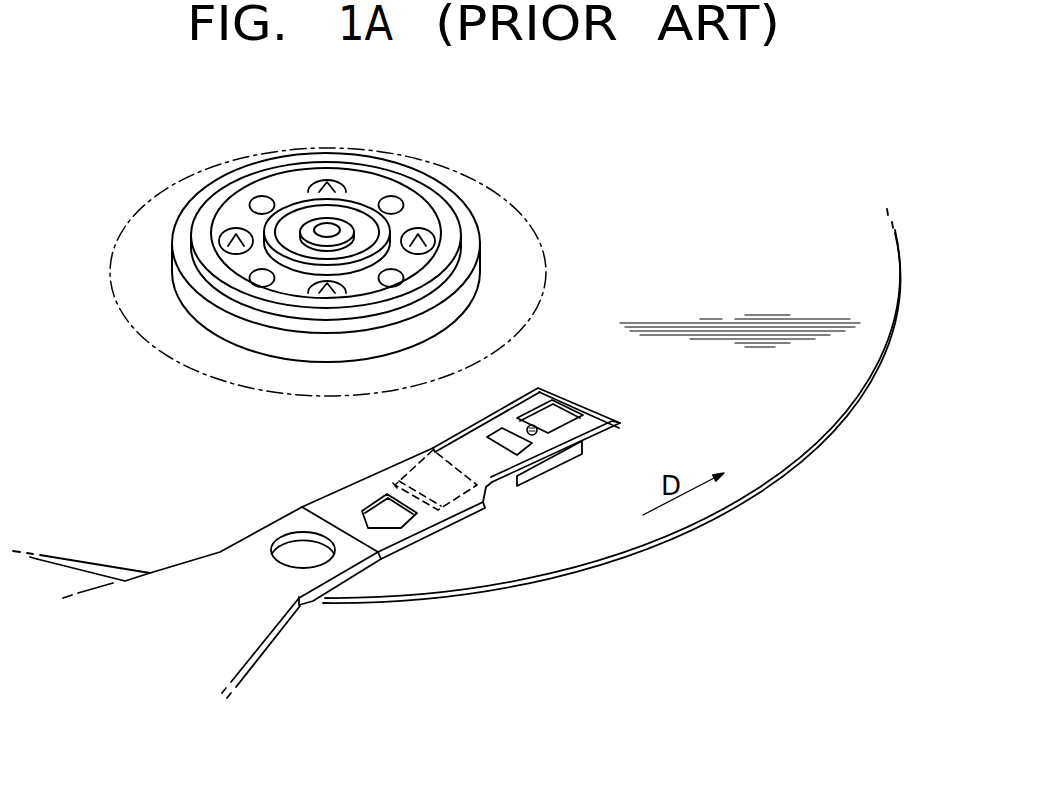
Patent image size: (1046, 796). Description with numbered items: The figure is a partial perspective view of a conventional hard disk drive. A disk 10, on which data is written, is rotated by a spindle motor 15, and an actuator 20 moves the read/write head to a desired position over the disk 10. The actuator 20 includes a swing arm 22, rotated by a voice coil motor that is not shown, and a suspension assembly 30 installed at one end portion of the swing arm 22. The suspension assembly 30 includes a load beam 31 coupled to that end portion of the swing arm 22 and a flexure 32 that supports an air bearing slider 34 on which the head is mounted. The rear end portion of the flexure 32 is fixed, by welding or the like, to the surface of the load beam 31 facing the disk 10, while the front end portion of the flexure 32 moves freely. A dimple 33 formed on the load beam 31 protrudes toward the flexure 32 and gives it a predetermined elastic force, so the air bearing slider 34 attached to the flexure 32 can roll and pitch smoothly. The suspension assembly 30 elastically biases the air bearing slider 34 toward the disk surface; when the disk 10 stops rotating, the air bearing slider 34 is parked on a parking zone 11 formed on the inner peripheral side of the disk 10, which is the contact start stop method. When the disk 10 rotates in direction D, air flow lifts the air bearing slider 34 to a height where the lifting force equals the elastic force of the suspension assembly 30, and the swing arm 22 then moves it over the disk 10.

The disk 10 is at (752, 443).
The parking zone 11 is at (438, 335).
The spindle motor 15 is at (282, 193).
The actuator 20 is at (278, 471).
The swing arm 22 is at (242, 628).
The suspension assembly 30 is at (513, 459).
The load beam 31 is at (453, 507).
The flexure 32 is at (618, 435).
The dimple 33 is at (532, 425).
The air bearing slider 34 is at (539, 469).